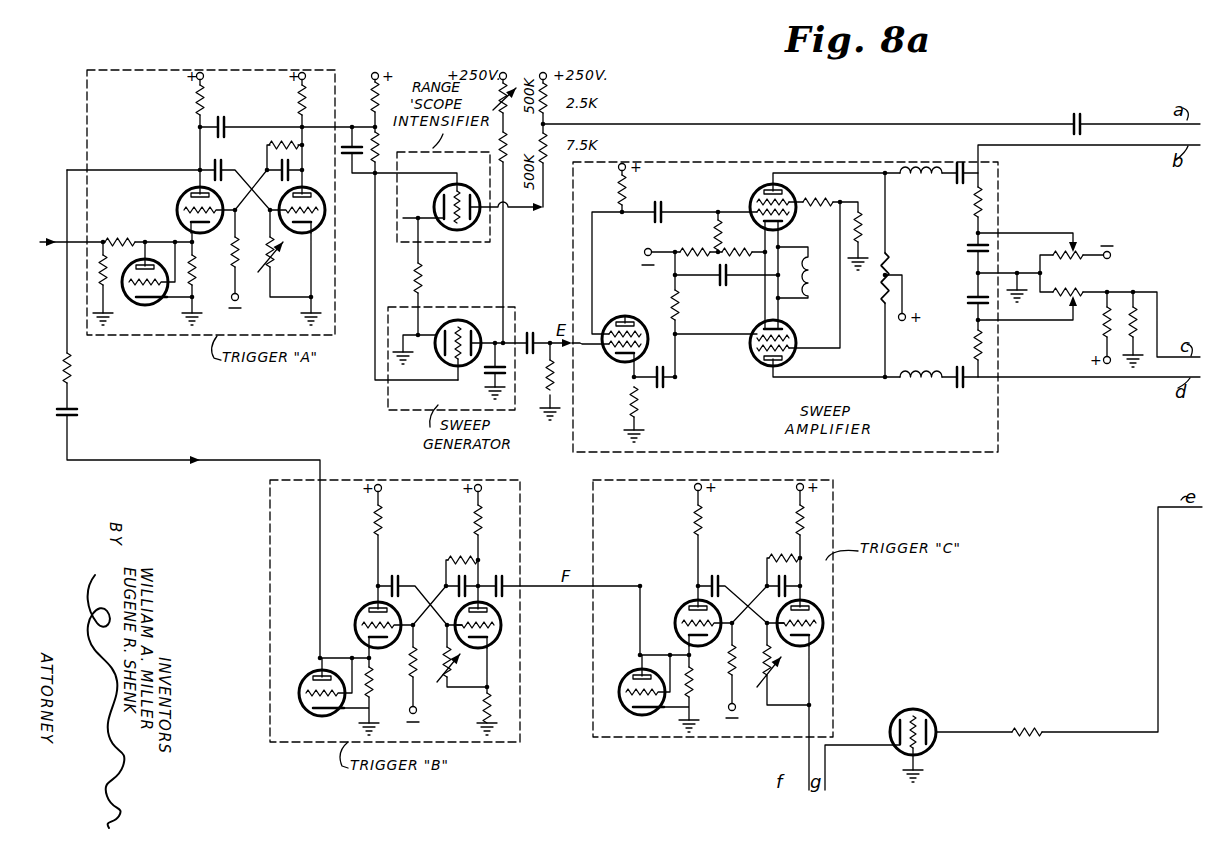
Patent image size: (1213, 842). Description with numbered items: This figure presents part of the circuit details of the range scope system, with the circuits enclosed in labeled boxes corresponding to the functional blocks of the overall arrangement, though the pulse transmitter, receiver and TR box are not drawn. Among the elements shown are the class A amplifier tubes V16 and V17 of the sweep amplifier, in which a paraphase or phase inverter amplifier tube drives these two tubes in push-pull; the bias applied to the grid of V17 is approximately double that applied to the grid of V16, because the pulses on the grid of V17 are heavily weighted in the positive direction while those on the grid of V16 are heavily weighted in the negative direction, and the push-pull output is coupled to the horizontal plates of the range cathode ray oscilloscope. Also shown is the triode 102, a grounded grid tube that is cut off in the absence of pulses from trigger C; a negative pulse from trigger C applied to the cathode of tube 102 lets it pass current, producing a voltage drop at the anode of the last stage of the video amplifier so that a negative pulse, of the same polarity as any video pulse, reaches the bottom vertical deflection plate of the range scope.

The triode 102 is at (942, 718).
The class A amplifier tube V16 is at (750, 195).
The class A amplifier tube V17 is at (755, 365).